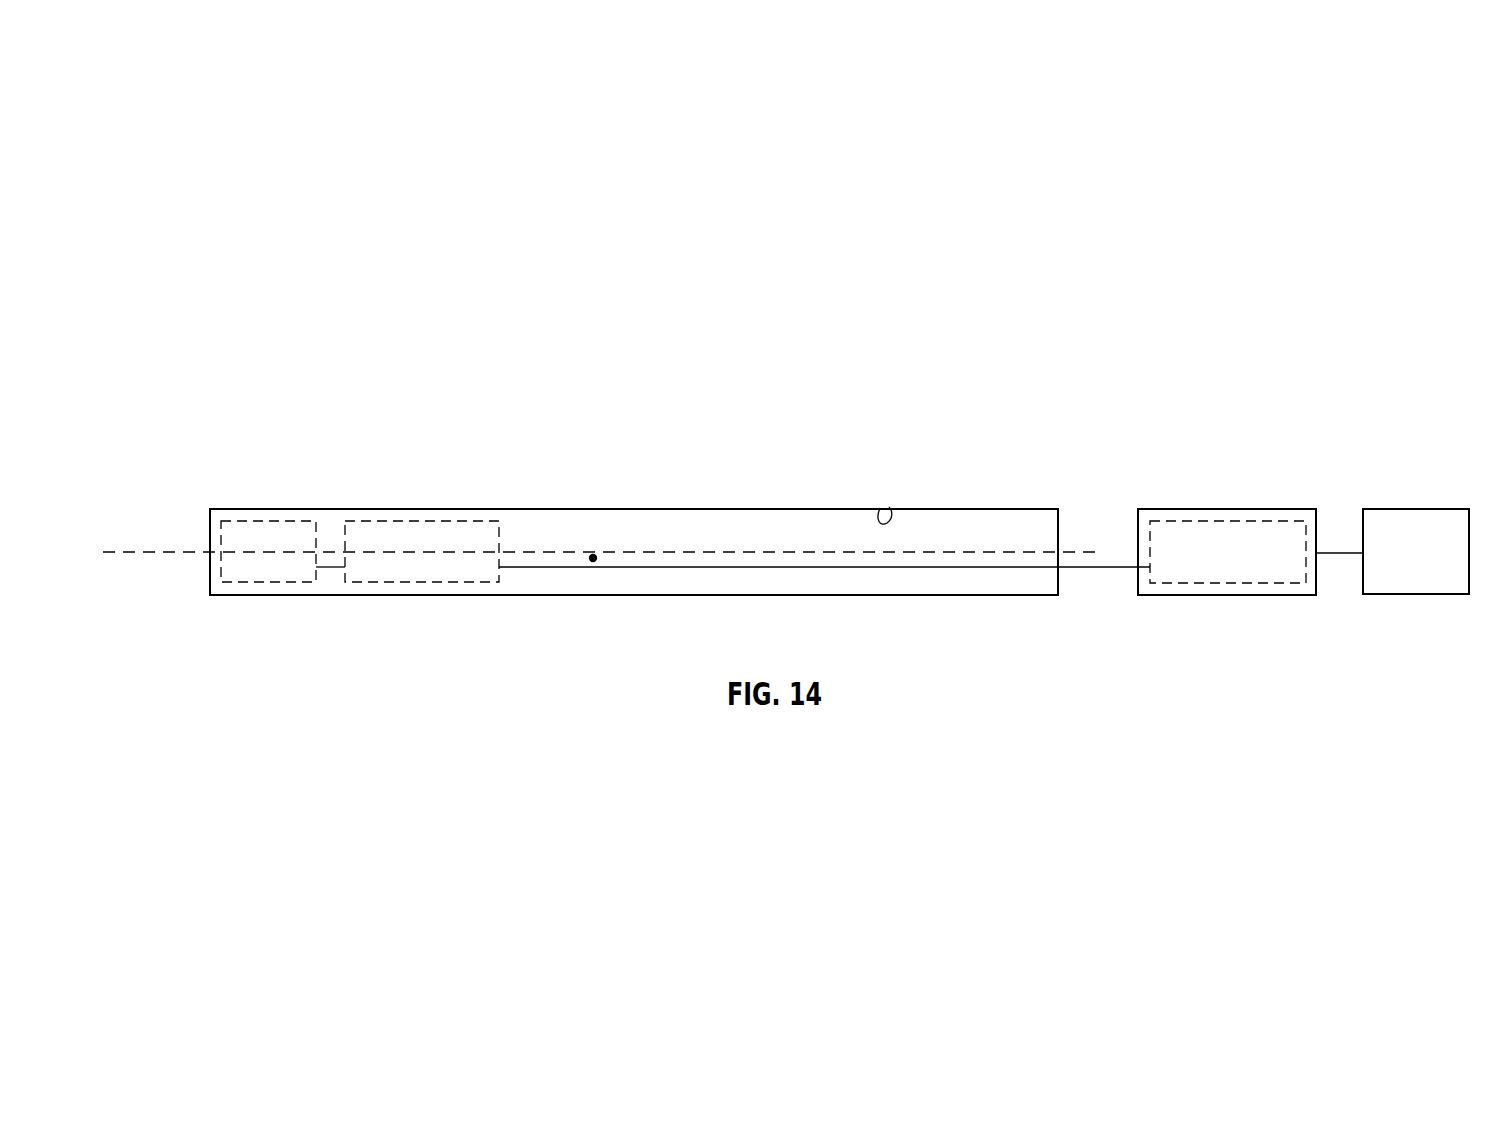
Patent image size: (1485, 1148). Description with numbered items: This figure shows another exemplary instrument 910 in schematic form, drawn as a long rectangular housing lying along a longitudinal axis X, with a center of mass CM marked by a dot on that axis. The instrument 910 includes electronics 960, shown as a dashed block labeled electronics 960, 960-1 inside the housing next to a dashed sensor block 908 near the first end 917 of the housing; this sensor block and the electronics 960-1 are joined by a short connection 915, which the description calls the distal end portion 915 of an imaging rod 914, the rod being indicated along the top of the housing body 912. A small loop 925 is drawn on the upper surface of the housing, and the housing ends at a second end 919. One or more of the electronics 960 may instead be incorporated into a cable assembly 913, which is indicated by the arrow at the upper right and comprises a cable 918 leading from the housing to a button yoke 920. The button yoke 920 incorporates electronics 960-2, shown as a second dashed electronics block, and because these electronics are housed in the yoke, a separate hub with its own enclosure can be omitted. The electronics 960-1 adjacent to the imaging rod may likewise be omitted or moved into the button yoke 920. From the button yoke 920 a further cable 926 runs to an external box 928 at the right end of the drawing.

The instrument 910 is at (196, 410).
The housing body 912 is at (651, 505).
The cable assembly 913 is at (1360, 327).
The imaging rod 914 is at (694, 508).
The distal end portion 915 is at (280, 508).
The first end of housing 917 is at (208, 524).
The second end of housing 919 is at (1058, 518).
The cable 918 is at (1103, 567).
The sensor 908 is at (254, 510).
The electronics 960 is at (422, 510).
The electronics 960-1 is at (422, 551).
The electronics 960-2 is at (1003, 514).
The button yoke 920 is at (1290, 504).
The attachment loop 925 is at (880, 508).
The cable to external device 926 is at (1347, 555).
The external device 928 is at (1415, 509).
The center of mass CM is at (592, 554).
The longitudinal axis X is at (125, 551).